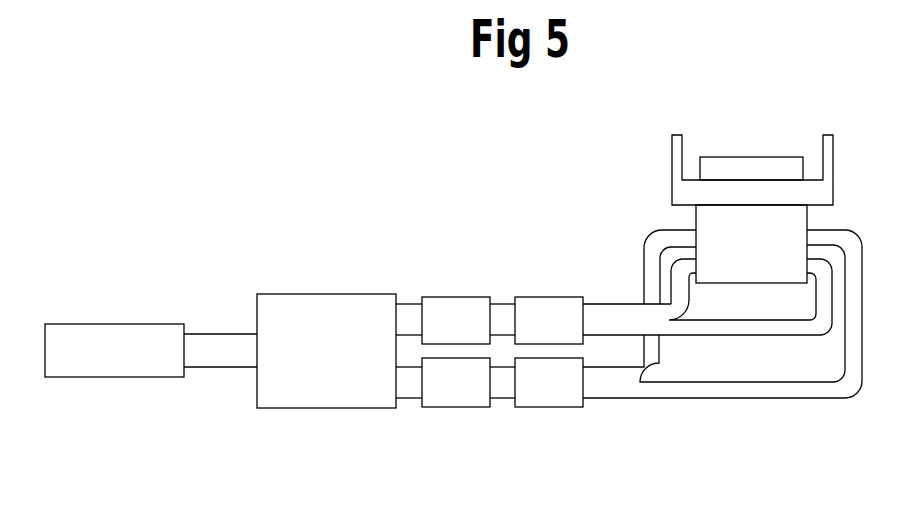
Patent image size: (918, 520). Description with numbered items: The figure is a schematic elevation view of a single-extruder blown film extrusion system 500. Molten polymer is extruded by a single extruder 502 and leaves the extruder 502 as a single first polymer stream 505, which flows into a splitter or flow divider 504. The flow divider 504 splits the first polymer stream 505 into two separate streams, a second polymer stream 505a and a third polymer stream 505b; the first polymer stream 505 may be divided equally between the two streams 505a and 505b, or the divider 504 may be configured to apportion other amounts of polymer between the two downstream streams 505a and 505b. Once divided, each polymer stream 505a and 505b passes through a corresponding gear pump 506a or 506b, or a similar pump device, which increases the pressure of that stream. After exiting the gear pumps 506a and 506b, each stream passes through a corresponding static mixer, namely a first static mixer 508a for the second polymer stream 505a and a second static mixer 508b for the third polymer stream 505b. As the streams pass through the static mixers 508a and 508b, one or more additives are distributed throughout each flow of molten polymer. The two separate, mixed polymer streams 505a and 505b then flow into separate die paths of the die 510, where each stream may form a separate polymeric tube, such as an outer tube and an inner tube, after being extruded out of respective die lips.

The blown film extrusion system 500 is at (362, 178).
The single extruder 502 is at (113, 322).
The flow divider 504 is at (330, 292).
The first polymer stream 505 is at (218, 352).
The second polymer stream 505a is at (400, 302).
The third polymer stream 505b is at (407, 399).
The gear pump 506a is at (470, 296).
The gear pump 506b is at (478, 407).
The first static mixer 508a is at (562, 296).
The second static mixer 508b is at (572, 407).
The die 510 is at (750, 242).